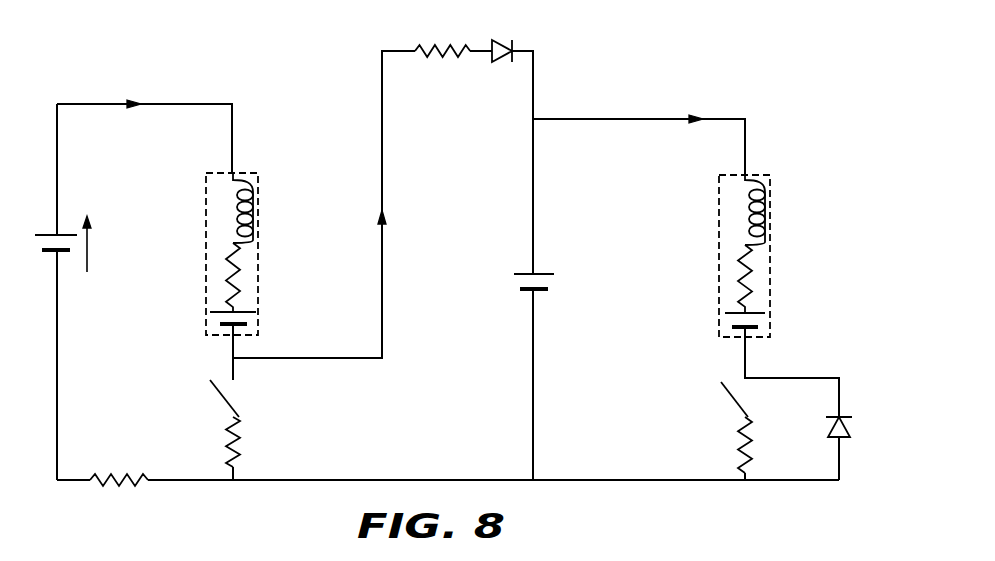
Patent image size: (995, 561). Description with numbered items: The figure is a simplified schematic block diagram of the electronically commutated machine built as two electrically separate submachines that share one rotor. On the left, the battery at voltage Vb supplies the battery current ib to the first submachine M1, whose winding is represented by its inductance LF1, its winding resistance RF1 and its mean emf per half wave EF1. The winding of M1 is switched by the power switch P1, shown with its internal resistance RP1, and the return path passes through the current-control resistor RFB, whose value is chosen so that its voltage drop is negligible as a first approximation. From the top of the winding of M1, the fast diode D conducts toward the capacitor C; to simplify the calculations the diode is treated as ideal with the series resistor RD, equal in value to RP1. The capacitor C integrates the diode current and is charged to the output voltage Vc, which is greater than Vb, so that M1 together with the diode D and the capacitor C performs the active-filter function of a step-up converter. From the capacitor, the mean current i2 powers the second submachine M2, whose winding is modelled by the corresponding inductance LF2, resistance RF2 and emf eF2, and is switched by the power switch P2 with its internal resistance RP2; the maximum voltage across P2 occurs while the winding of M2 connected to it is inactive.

The battery current ib is at (269, 149).
The battery voltage Vb is at (78, 244).
The first submachine M1 is at (216, 238).
The inductance of each winding of M1 LF1 is at (208, 208).
The resistance of each winding of M1 RF1 is at (202, 277).
The mean emf per half wave of each winding of M1 EF1 is at (210, 311).
The current-control feedback resistor RFB is at (119, 453).
The power switch of M1 P1 is at (197, 405).
The internal resistance of the power switch of M1 RP1 is at (258, 442).
The diode series resistor RD is at (438, 28).
The fast diode D is at (502, 69).
The capacitor C is at (521, 284).
The capacitor output voltage Vc is at (625, 290).
The mean current powering M2 i2 is at (692, 102).
The second submachine M2 is at (724, 242).
The inductance of each winding of M2 LF2 is at (716, 210).
The resistance of each winding of M2 RF2 is at (709, 279).
The mean emf per half wave of each winding of M2 eF2 is at (716, 318).
The power switch of M2 P2 is at (707, 395).
The internal resistance of the power switch of M2 RP2 is at (715, 445).